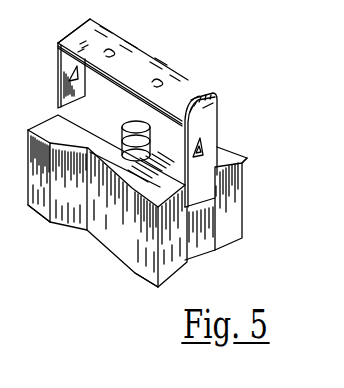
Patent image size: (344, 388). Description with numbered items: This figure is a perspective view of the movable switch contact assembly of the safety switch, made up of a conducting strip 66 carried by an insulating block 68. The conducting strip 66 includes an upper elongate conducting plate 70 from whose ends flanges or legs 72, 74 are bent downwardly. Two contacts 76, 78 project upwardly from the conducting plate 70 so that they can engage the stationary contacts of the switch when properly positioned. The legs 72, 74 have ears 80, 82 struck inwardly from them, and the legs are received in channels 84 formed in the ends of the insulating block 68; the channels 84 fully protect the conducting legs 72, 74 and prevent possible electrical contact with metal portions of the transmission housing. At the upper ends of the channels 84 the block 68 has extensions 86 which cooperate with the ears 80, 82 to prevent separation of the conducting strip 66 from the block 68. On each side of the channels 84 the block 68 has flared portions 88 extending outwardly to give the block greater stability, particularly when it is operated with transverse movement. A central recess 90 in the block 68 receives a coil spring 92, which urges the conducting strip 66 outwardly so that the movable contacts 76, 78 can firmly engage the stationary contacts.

The conducting strip 66 is at (55, 45).
The insulating block 68 is at (101, 246).
The conducting plate 70 is at (147, 52).
The leg 72 is at (57, 70).
The leg 74 is at (223, 120).
The contact 76 is at (113, 48).
The contact 78 is at (150, 90).
The ear 80 is at (145, 127).
The ear 82 is at (206, 144).
The channel 84 is at (214, 221).
The extension 86 is at (208, 193).
The flared portion 88 is at (157, 83).
The central recess 90 is at (210, 110).
The coil spring 92 is at (196, 96).